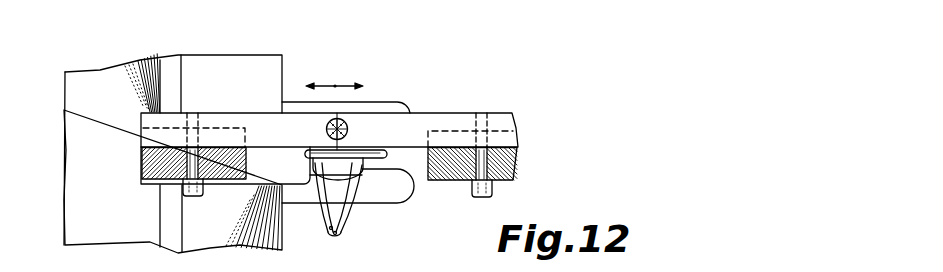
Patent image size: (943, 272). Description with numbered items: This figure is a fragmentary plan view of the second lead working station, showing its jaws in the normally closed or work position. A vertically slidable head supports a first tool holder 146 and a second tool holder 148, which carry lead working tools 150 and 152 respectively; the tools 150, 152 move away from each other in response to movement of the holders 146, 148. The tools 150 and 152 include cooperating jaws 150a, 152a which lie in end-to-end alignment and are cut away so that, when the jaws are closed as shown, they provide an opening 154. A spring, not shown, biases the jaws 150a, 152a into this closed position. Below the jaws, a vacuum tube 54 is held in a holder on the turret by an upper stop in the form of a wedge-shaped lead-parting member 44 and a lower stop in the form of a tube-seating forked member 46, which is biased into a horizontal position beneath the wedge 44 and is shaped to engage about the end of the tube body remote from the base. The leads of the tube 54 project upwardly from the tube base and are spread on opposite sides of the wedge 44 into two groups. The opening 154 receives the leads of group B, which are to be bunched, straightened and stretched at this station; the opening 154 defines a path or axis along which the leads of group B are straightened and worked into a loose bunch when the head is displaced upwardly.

The lead working tool 150 is at (453, 112).
The jaw 150a is at (350, 123).
The lead working tool 152 is at (250, 108).
The jaw 152a is at (324, 118).
The opening 154 is at (333, 138).
The second tool holder 148 is at (147, 166).
The first tool holder 146 is at (518, 161).
The lead-parting member 44 is at (386, 157).
The tube-seating forked member 46 is at (390, 203).
The vacuum tube 54 is at (357, 184).
The group of leads B is at (327, 128).